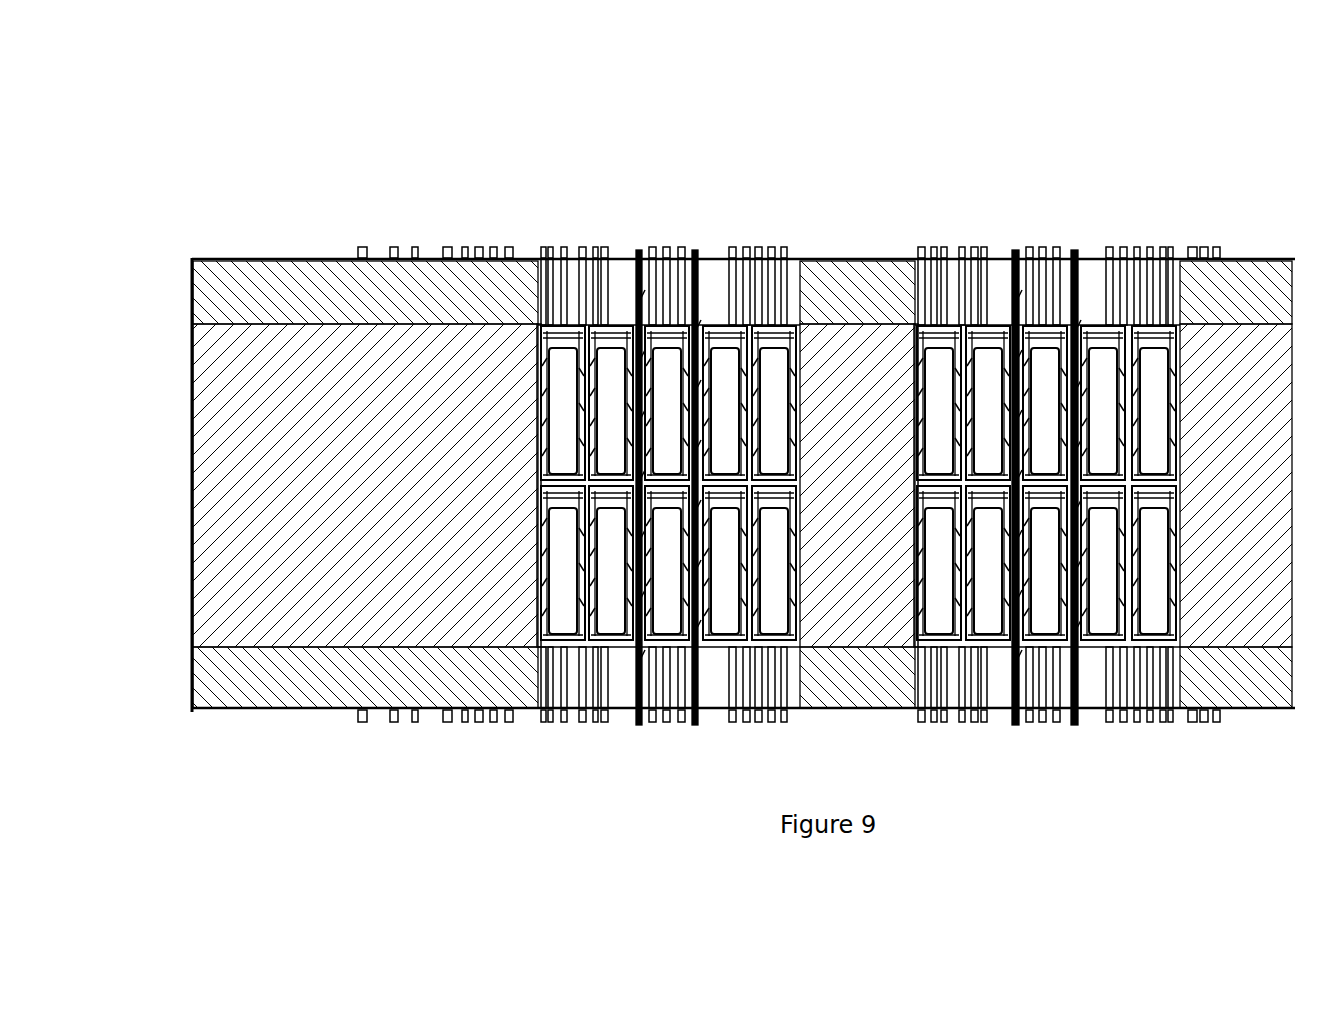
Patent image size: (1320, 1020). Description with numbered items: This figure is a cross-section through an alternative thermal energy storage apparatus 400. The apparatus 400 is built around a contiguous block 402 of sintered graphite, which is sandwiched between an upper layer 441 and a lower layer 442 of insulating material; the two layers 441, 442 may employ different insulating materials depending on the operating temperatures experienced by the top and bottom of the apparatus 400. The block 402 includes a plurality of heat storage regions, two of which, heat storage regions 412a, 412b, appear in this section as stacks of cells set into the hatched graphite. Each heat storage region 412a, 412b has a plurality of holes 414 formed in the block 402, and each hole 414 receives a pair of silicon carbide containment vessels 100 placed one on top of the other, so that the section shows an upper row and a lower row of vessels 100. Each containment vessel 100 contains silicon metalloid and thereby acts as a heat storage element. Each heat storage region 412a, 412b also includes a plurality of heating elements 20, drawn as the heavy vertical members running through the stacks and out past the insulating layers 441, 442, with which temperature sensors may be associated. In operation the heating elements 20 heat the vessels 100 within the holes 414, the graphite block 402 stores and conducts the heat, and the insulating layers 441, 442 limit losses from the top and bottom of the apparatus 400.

The thermal energy storage apparatus 400 is at (232, 196).
The hole 414 is at (544, 382).
The heating element 20 is at (550, 252).
The silicon carbide containment vessel 100 is at (611, 365).
The heat storage region 412a is at (673, 216).
The heat storage region 412b is at (1045, 216).
The upper layer of insulating material 441 is at (210, 290).
The contiguous block of sintered graphite 402 is at (210, 471).
The lower layer of insulating material 442 is at (197, 654).